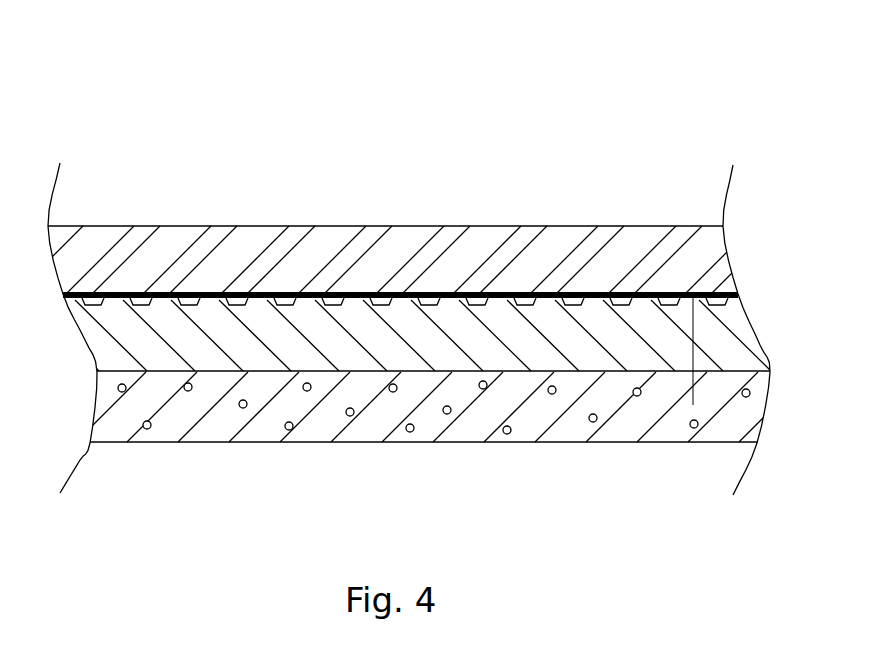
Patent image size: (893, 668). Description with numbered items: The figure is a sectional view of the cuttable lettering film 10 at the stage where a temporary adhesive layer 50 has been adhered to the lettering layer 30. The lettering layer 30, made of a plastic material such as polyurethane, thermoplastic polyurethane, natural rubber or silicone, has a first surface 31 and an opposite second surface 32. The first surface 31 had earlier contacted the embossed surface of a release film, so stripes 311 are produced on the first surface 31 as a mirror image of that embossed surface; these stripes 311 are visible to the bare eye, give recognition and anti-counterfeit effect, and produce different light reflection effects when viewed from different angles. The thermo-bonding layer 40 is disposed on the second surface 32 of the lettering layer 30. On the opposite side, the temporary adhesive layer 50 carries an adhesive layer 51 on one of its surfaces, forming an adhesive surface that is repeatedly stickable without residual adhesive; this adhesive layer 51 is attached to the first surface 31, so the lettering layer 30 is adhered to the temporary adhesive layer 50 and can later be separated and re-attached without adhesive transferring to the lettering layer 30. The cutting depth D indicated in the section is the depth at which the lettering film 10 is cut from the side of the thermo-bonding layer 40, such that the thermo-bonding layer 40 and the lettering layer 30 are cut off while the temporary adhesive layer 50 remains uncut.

The lettering film 10 is at (150, 162).
The lettering layer 30 is at (399, 310).
The first surface 31 is at (399, 224).
The stripes 311 is at (405, 191).
The second surface 32 is at (228, 366).
The thermo-bonding layer 40 is at (569, 458).
The temporary adhesive layer 50 is at (655, 211).
The adhesive layer 51 is at (400, 191).
The cutting depth D is at (714, 435).